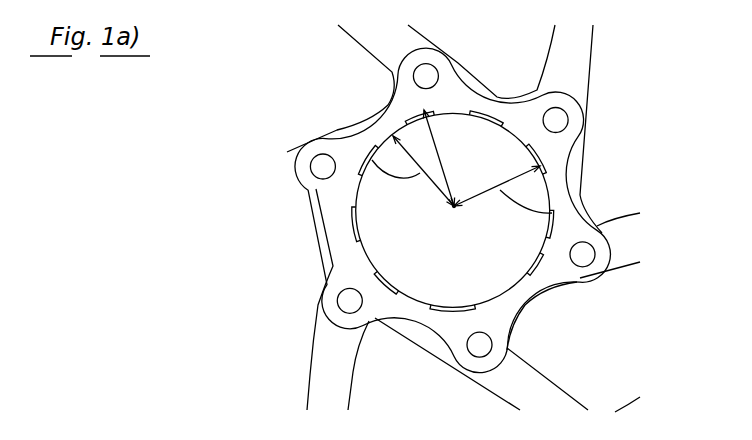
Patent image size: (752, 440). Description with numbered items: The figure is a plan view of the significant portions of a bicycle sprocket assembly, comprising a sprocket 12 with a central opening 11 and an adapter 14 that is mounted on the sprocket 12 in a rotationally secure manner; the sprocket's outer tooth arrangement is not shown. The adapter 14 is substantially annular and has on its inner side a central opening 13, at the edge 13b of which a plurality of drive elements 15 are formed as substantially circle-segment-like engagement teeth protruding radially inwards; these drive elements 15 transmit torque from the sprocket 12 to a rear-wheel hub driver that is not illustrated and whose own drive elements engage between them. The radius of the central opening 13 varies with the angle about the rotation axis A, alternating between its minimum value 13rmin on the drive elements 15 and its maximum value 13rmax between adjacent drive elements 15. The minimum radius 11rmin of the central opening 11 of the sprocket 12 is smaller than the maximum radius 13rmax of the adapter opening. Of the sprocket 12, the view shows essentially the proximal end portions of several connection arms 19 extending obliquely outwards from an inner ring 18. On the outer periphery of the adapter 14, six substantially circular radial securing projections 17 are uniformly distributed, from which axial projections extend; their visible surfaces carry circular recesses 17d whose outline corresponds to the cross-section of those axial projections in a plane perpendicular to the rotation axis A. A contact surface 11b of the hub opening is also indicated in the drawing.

The central opening 11 is at (498, 279).
The hub contact surface 11b is at (387, 280).
The minimum radius of the central opening 11rmin is at (585, 207).
The sprocket 12 is at (602, 68).
The central opening 13 is at (432, 284).
The edge 13b is at (356, 223).
The maximum radius 13rmax is at (440, 145).
The minimum radius 13rmin is at (364, 154).
The adapter 14 is at (332, 268).
The drive elements 15 is at (540, 262).
The securing projections 17 is at (578, 275).
The circular recesses 17d is at (591, 252).
The inner ring 18 is at (323, 229).
The connection arms 19 is at (556, 384).
The rotation axis A is at (448, 226).